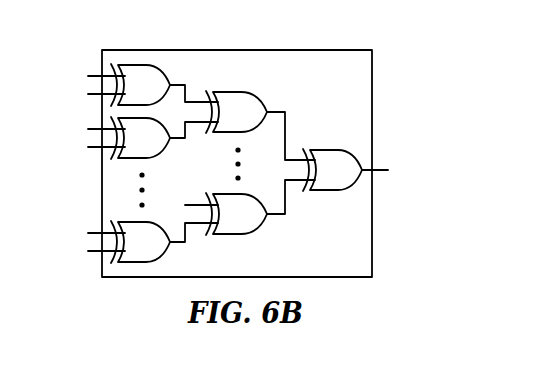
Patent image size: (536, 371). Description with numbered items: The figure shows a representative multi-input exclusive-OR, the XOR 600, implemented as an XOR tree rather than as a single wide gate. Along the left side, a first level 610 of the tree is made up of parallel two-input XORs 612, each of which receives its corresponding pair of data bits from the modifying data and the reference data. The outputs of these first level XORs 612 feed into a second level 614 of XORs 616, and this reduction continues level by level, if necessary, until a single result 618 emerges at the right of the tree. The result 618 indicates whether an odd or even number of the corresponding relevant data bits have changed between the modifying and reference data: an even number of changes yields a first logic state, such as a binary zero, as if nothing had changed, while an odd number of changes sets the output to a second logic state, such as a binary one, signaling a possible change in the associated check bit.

The XOR 600 is at (372, 82).
The first level 610 is at (143, 50).
The two-input XOR 612 is at (124, 106).
The second level 614 is at (238, 76).
The XOR 616 is at (250, 200).
The result 618 is at (385, 172).